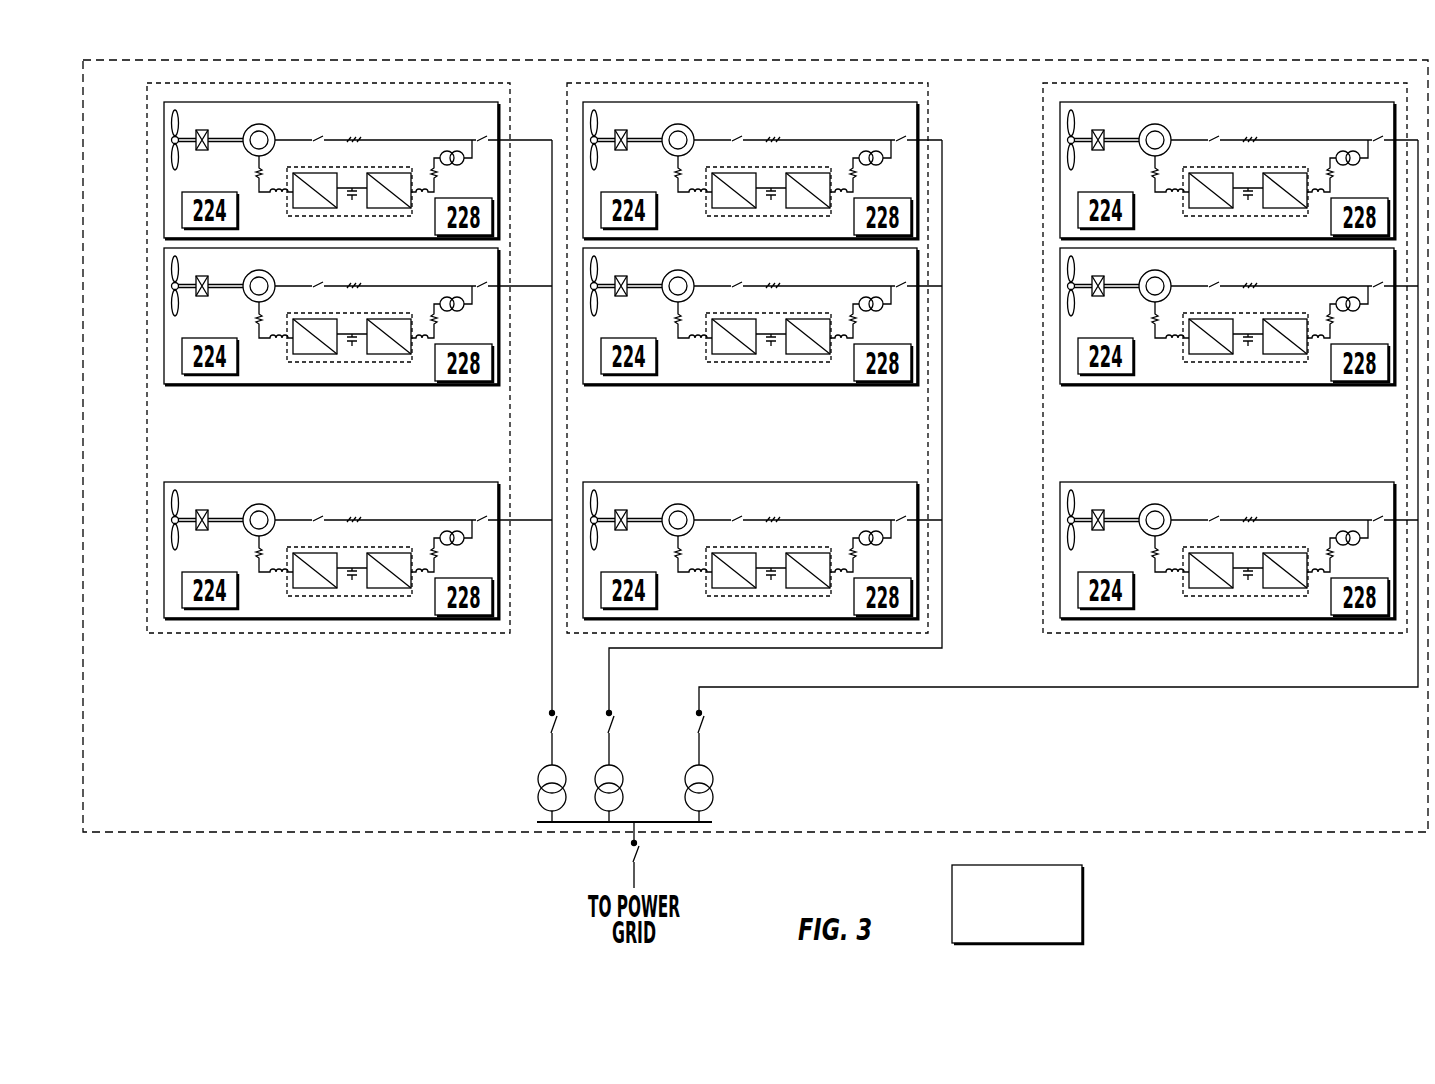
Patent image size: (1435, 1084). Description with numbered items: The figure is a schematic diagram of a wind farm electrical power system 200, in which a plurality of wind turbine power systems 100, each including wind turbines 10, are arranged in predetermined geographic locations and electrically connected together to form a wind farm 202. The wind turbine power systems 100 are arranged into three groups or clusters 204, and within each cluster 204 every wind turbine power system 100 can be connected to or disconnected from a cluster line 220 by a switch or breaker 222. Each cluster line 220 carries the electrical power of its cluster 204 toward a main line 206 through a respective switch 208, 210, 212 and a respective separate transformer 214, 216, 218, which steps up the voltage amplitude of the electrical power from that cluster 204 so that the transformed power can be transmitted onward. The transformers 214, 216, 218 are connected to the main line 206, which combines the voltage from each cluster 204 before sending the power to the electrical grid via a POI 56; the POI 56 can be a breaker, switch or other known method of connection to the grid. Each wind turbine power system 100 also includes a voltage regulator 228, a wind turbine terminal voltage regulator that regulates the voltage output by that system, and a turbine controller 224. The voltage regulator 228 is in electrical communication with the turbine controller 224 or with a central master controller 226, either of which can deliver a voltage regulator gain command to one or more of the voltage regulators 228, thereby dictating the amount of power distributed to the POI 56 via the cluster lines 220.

The wind turbine 10 is at (668, 325).
The POI 56 is at (650, 854).
The wind turbine power system 100 is at (917, 175).
The wind farm electrical power system 200 is at (343, 893).
The wind farm 202 is at (1253, 835).
The cluster 204 is at (147, 277).
The main line 206 is at (578, 824).
The switch 208 is at (530, 719).
The switch 210 is at (597, 709).
The switch 212 is at (680, 720).
The transformer 214 is at (536, 778).
The transformer 216 is at (614, 765).
The transformer 218 is at (713, 772).
The cluster line 220 is at (527, 138).
The switch or breaker 222 is at (895, 310).
The turbine controller 224 is at (658, 400).
The central master controller 226 is at (1017, 904).
The voltage regulator 228 is at (912, 407).